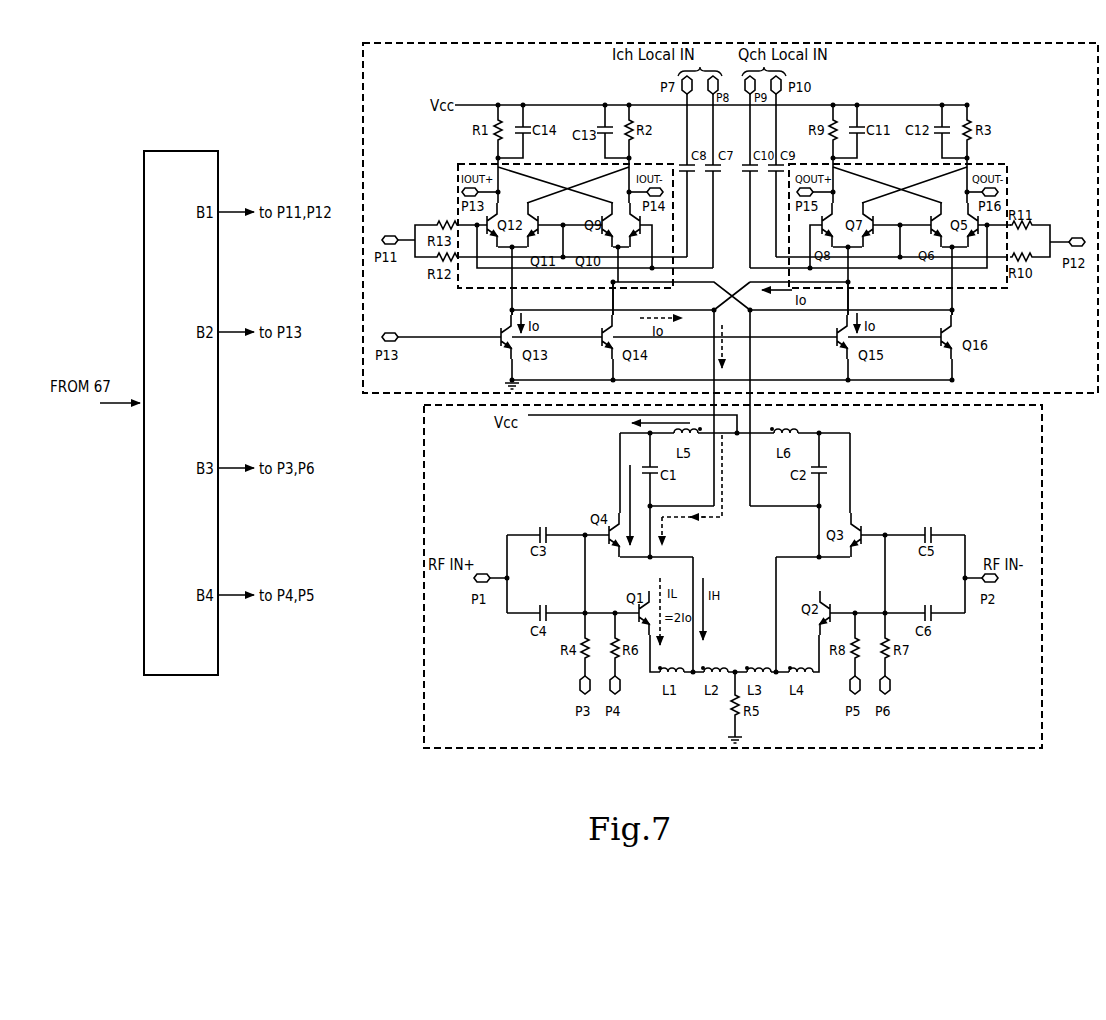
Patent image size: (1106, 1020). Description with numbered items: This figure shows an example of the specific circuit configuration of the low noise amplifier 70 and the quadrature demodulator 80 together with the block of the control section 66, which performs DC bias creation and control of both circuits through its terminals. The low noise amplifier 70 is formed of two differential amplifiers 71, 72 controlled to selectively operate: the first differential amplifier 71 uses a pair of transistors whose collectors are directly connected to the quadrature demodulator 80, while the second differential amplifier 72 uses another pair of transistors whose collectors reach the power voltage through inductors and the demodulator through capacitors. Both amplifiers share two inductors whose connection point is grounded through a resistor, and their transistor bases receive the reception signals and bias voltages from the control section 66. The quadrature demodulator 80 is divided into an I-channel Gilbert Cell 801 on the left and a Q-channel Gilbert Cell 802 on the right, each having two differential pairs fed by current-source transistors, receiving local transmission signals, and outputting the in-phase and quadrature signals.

The control section 66 is at (218, 148).
The low noise amplifier (LNA) 70 is at (1042, 732).
The first differential amplifier 71 is at (758, 624).
The second differential amplifier 72 is at (758, 549).
The quadrature demodulator 80 is at (1098, 393).
The Gilbert Cell 801 is at (458, 164).
The Gilbert Cell 802 is at (1000, 164).